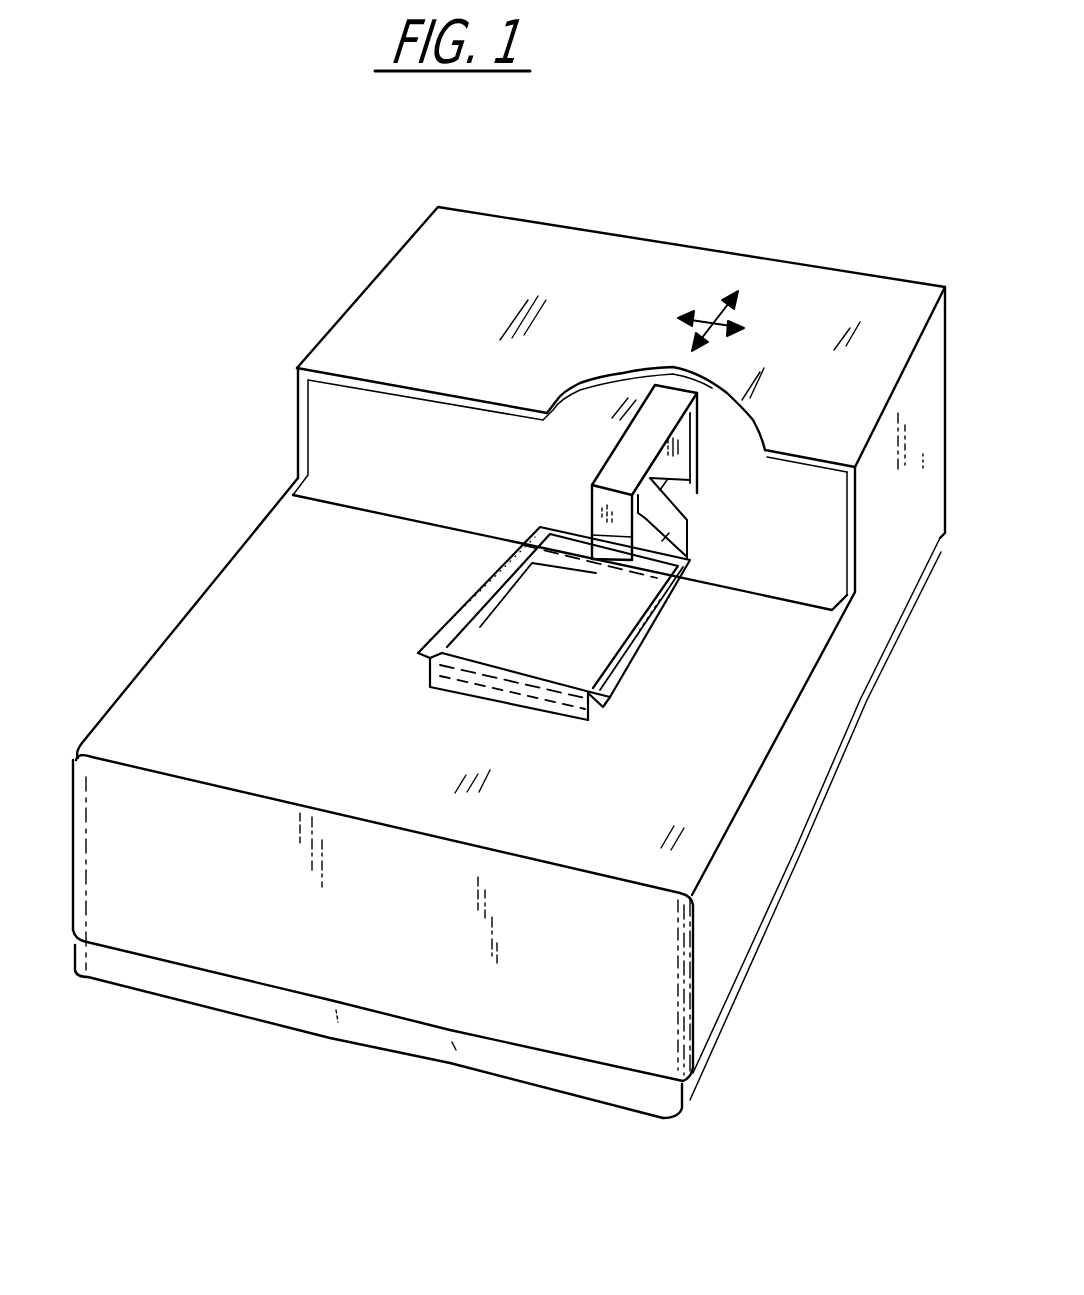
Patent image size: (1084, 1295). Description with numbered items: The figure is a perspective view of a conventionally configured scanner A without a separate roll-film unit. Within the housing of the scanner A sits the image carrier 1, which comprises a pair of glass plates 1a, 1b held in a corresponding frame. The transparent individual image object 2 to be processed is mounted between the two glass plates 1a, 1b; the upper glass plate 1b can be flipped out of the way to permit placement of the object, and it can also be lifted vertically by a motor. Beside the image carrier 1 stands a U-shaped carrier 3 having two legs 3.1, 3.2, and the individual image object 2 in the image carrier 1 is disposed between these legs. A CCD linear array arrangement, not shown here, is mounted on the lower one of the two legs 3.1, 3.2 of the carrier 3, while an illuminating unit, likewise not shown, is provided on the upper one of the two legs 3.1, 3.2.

The scanner A is at (184, 444).
The image carrier 1 is at (401, 667).
The glass plate 1a is at (597, 700).
The upper glass plate 1b is at (617, 627).
The transparent individual image object 2 is at (468, 605).
The U-shaped carrier 3 is at (590, 458).
The leg 3.1 is at (687, 500).
The leg 3.2 is at (678, 430).